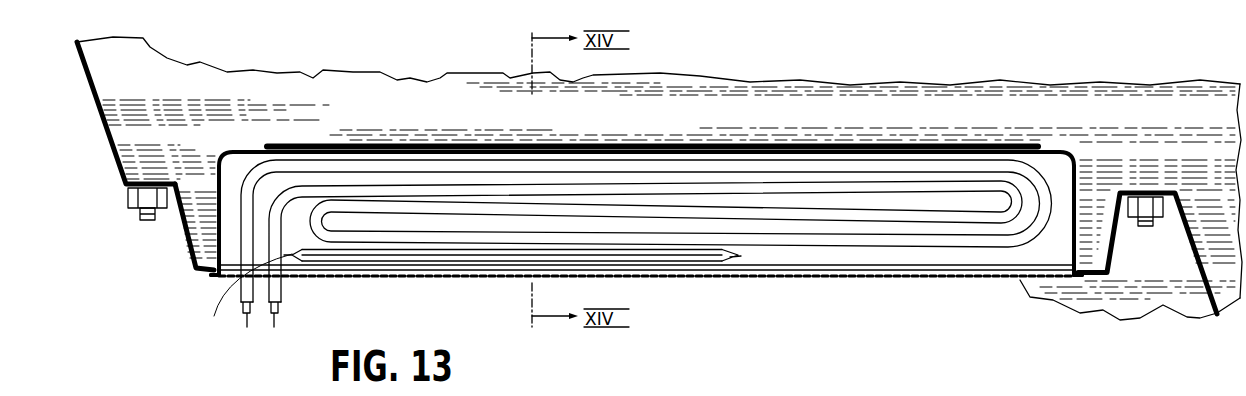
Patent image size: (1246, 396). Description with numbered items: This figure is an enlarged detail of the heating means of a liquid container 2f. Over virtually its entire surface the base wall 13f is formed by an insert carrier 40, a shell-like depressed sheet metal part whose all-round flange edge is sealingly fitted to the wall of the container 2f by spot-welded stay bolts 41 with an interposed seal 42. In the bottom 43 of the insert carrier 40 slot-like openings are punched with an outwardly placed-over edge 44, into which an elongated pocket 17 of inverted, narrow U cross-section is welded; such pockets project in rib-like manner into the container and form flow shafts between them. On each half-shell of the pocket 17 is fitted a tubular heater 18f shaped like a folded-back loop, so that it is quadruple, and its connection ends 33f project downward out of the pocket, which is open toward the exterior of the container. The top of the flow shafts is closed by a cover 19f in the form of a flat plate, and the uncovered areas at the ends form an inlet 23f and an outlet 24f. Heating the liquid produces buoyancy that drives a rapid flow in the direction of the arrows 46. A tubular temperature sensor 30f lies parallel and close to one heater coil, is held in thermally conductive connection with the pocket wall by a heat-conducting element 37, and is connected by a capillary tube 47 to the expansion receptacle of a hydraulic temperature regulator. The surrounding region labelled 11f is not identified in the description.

The container 2f is at (80, 64).
The insulation 11f is at (365, 82).
The base wall 13f is at (384, 284).
The pocket 17 is at (1075, 157).
The tubular heater 18f is at (616, 184).
The cover 19f is at (805, 146).
The inlet 23f is at (1092, 181).
The outlet 24f is at (223, 150).
The temperature sensor 30f is at (735, 262).
The connection ends 33f is at (274, 328).
The heat-conducting element 37 is at (636, 262).
The insert carrier 40 is at (190, 267).
The stay bolts 41 is at (154, 221).
The seal 42 is at (152, 182).
The bottom 43 is at (203, 274).
The placed-over edge 44 is at (1082, 278).
The flow arrows 46 is at (212, 164).
The capillary tube 47 is at (216, 318).